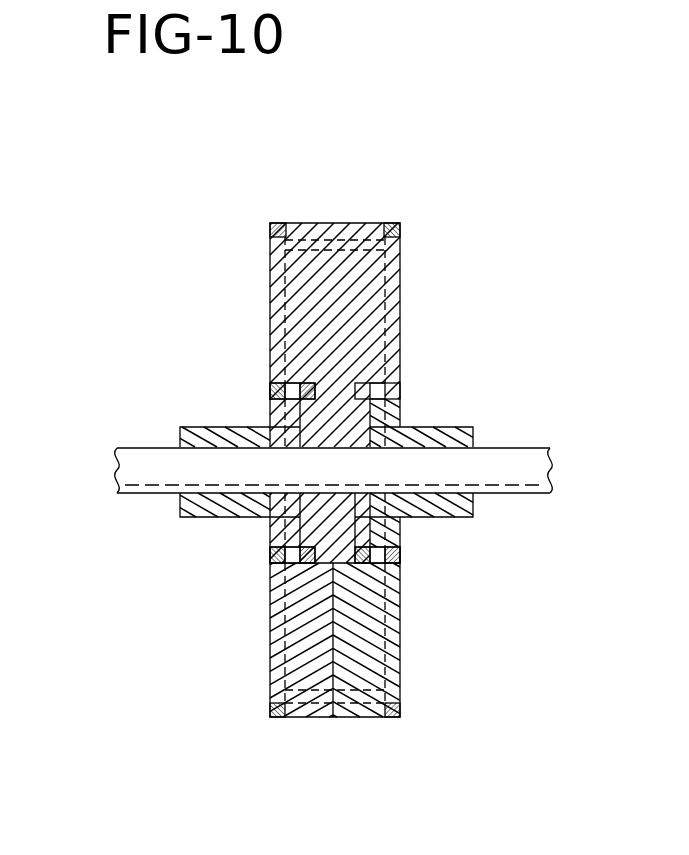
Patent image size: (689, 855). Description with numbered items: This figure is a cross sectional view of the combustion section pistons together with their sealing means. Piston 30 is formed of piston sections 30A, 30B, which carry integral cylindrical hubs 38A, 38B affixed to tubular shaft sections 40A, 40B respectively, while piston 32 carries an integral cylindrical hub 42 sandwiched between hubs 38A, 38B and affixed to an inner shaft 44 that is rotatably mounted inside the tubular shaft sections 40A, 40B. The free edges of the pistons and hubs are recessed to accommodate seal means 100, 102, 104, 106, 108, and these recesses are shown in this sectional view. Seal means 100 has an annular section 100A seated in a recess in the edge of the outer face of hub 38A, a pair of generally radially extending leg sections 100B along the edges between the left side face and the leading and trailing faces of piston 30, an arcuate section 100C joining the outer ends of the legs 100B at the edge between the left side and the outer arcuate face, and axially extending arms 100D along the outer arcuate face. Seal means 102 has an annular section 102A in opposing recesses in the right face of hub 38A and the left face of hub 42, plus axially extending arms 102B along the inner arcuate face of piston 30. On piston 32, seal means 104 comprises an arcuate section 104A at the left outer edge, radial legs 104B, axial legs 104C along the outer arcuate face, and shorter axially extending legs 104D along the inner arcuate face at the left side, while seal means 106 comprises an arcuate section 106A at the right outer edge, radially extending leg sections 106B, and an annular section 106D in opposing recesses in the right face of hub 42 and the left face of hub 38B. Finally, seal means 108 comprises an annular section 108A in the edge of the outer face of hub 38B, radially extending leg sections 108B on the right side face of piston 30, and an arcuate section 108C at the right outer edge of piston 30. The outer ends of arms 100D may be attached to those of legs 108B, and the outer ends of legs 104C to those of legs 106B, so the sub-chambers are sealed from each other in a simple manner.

The piston 30 is at (318, 719).
The piston section 30A is at (292, 717).
The piston section 30B is at (360, 717).
The piston 32 is at (344, 221).
The cylindrical hub 38A is at (268, 552).
The cylindrical hub 38B is at (400, 552).
The tubular shaft section 40A is at (180, 426).
The tubular shaft section 40B is at (473, 427).
The cylindrical hub 42 is at (400, 541).
The inner shaft 44 is at (118, 449).
The seal means 100 is at (268, 560).
The annular section 100A is at (276, 388).
The leg sections 100B is at (276, 645).
The arcuate section 100C is at (270, 714).
The axially extending arms 100D is at (272, 681).
The seal means 102 is at (294, 568).
The annular section 102A is at (309, 383).
The axially extending arms 102B is at (270, 620).
The seal means 104 is at (267, 228).
The arcuate section 104A is at (270, 222).
The radial legs 104B is at (268, 274).
The axial legs 104C is at (316, 240).
The shorter axially extending legs 104D is at (268, 418).
The seal means 106 is at (403, 229).
The arcuate section 106A is at (400, 222).
The leg sections 106B is at (402, 274).
The annular section 106D is at (400, 352).
The seal means 108 is at (404, 388).
The annular section 108A is at (400, 560).
The leg sections 108B is at (400, 632).
The arcuate section 108C is at (400, 712).